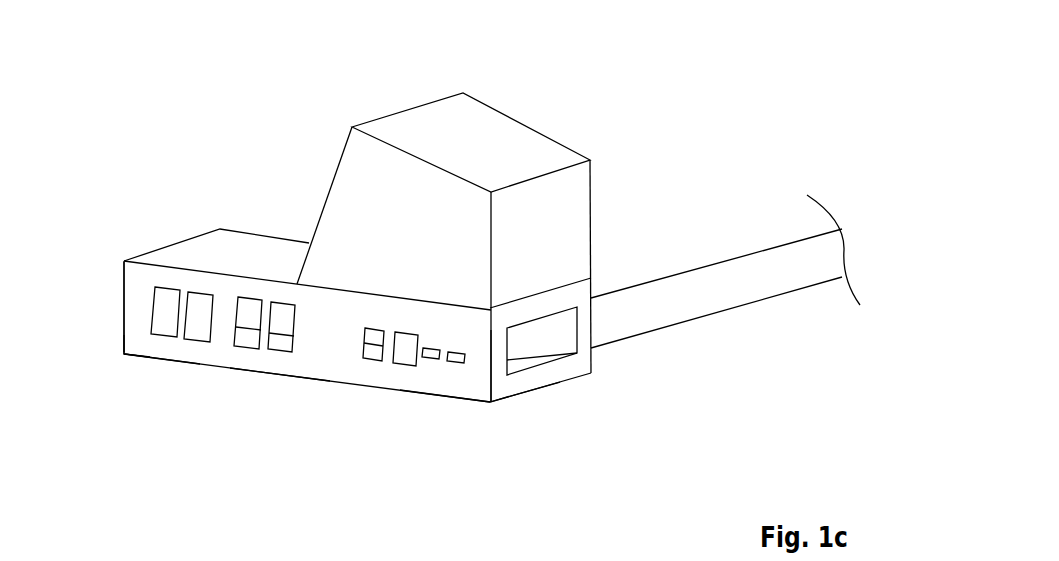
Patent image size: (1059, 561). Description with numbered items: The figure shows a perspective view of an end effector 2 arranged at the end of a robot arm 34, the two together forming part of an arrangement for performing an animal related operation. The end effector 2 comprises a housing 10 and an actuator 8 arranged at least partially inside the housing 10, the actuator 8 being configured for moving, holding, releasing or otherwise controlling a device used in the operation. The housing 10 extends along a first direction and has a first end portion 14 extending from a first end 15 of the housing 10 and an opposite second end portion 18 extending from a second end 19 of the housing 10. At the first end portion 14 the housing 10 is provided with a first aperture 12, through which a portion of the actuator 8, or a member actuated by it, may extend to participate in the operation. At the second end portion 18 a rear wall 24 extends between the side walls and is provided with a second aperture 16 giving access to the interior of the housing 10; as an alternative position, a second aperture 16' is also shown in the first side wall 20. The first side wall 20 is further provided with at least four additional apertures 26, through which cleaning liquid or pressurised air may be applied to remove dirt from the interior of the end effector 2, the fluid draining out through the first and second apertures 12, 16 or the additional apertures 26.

The end effector 2 is at (628, 62).
The actuator 8 is at (365, 328).
The housing 10 is at (370, 387).
The first aperture 12 is at (118, 312).
The first end portion 14 is at (137, 368).
The first end 15 is at (120, 345).
The second aperture 16 is at (579, 365).
The second aperture 16' is at (425, 385).
The second end portion 18 is at (456, 410).
The second end 19 is at (523, 380).
The first side wall 20 is at (310, 367).
The rear wall 24 is at (498, 390).
The additional aperture 26 is at (362, 353).
The robot arm 34 is at (757, 272).